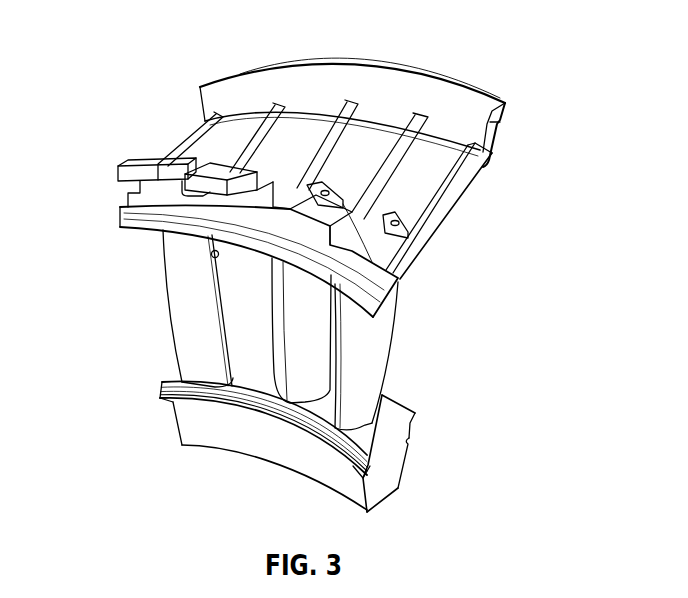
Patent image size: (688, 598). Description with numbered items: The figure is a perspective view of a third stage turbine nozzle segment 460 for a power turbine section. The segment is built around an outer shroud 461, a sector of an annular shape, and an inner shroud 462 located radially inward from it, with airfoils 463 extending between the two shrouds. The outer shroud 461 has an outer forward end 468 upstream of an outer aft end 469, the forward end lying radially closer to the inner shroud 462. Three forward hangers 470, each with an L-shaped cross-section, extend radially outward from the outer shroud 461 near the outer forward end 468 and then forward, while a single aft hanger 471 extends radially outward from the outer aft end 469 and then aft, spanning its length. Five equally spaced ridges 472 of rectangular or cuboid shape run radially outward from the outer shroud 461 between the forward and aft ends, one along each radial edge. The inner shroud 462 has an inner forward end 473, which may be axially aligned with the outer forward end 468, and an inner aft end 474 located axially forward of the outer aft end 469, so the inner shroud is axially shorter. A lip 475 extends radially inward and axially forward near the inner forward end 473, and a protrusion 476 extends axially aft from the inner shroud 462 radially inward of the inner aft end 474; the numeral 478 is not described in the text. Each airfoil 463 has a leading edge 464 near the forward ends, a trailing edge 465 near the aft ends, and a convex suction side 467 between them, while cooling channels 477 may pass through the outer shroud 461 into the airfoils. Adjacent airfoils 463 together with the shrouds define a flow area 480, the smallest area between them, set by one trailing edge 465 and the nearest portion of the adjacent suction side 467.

The third stage turbine nozzle segment 460 is at (148, 40).
The outer shroud 461 is at (423, 168).
The inner shroud 462 is at (393, 450).
The airfoils 463 is at (320, 320).
The leading edge 464 is at (162, 270).
The trailing edge 465 is at (212, 254).
The suction side 467 is at (183, 327).
The outer forward end 468 is at (120, 215).
The outer aft end 469 is at (492, 160).
The forward hangers 470 is at (118, 173).
The aft hanger 471 is at (498, 118).
The ridges 472 is at (257, 137).
The inner forward end 473 is at (347, 443).
The inner aft end 474 is at (415, 417).
The lip 475 is at (353, 476).
The protrusion 476 is at (410, 440).
The cooling channels 477 is at (340, 205).
The inner flange bottom edge 478 is at (383, 488).
The flow area 480 is at (327, 355).